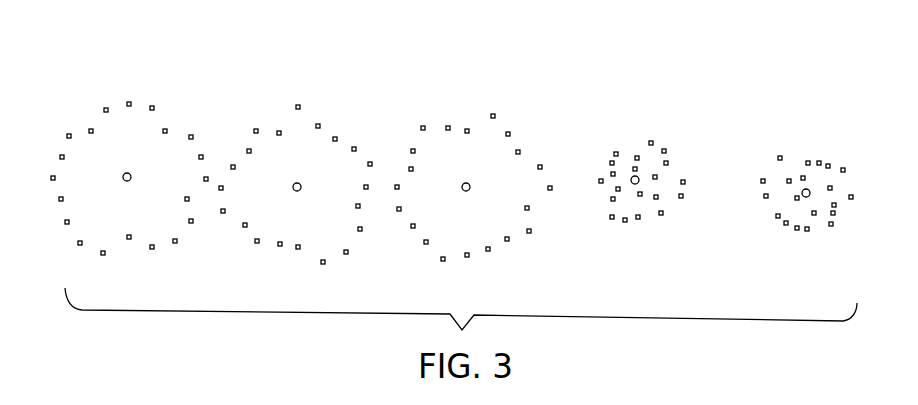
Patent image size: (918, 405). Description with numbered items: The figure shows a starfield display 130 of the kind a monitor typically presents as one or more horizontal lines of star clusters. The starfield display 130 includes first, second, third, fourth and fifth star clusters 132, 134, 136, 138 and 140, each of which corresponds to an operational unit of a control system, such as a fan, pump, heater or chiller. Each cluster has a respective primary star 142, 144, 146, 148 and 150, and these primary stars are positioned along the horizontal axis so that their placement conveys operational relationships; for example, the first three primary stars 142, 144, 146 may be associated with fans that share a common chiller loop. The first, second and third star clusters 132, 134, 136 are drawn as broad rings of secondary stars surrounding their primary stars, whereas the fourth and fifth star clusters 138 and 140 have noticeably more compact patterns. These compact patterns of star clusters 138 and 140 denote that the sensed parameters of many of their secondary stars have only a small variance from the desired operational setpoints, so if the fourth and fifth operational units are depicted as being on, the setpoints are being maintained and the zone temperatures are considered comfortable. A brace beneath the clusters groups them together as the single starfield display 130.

The starfield display 130 is at (240, 293).
The first star cluster 132 is at (121, 80).
The second star cluster 134 is at (303, 77).
The third star cluster 136 is at (447, 98).
The fourth star cluster 138 is at (672, 123).
The fifth star cluster 140 is at (820, 133).
The primary star 142 is at (127, 181).
The primary star 144 is at (300, 190).
The primary star 146 is at (467, 191).
The primary star 148 is at (633, 184).
The primary star 150 is at (807, 197).